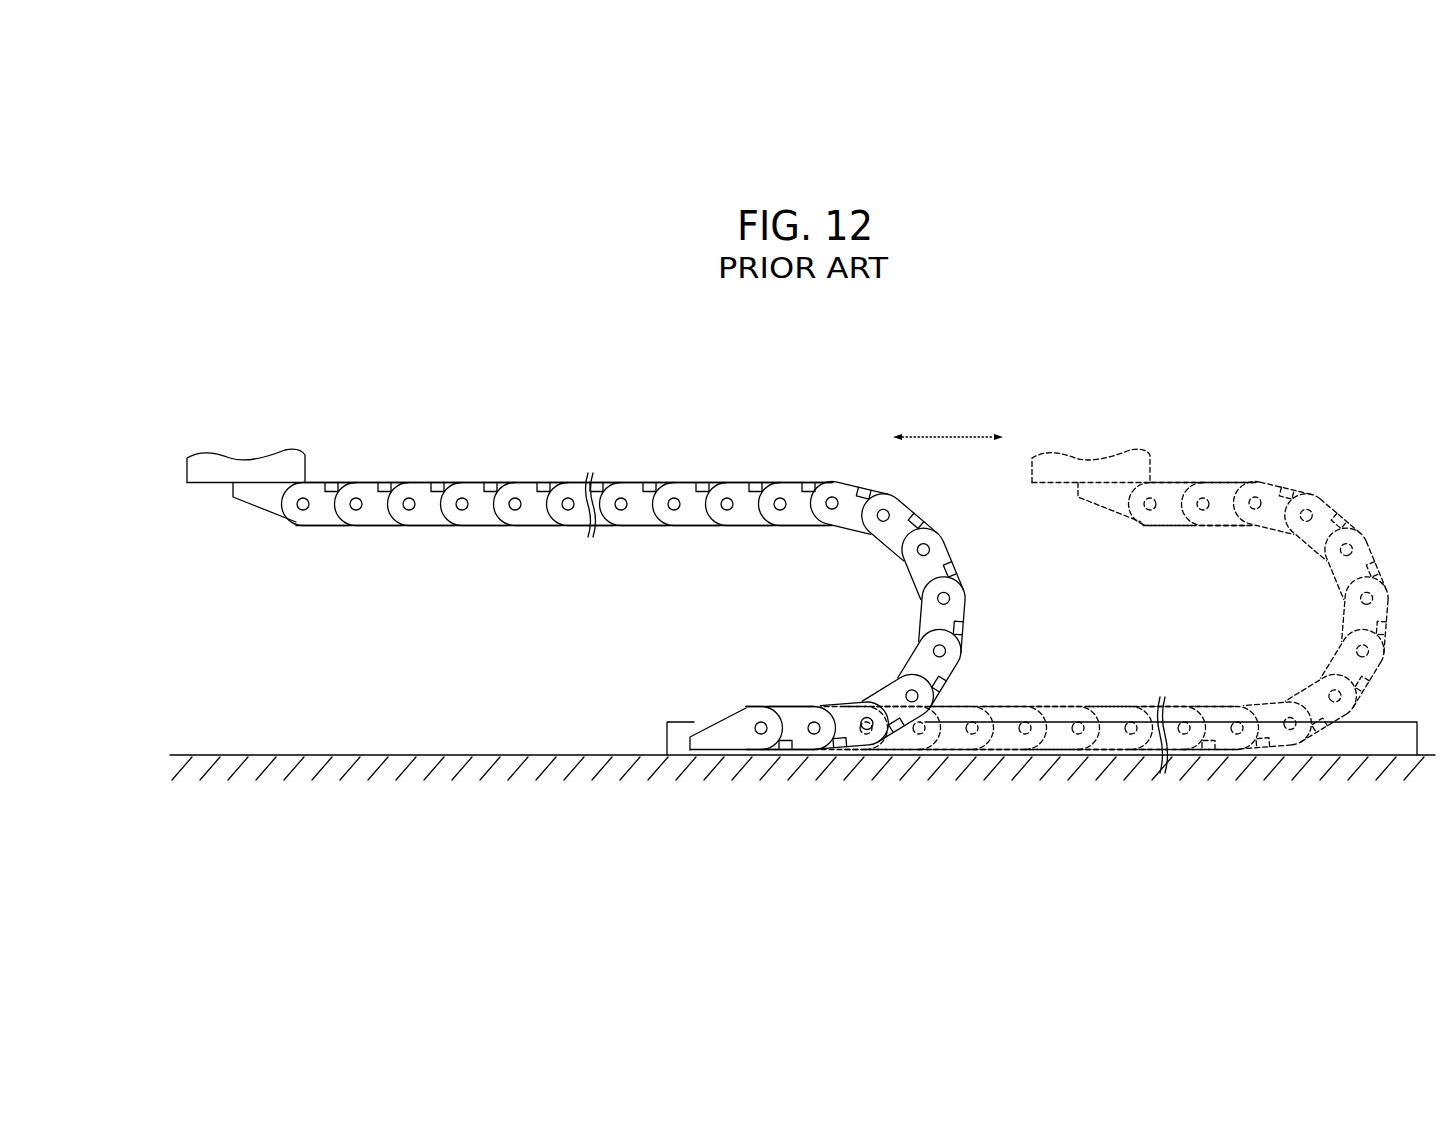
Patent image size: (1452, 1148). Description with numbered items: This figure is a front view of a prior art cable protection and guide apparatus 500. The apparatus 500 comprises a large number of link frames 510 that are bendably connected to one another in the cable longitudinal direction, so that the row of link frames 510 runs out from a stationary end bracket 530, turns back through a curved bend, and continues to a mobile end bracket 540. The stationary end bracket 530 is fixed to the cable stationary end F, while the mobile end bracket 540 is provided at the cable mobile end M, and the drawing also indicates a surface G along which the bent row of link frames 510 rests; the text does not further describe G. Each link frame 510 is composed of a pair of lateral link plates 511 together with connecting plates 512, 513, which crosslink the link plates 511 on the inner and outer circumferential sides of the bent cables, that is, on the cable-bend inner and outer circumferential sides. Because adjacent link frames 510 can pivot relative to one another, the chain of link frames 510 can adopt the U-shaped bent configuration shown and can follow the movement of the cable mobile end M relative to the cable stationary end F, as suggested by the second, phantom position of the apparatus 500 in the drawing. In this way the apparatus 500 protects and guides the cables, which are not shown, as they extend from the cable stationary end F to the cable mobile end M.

The cable protection and guide apparatus 500 is at (722, 402).
The link frame 510 is at (522, 470).
The link plate 511 is at (291, 527).
The connecting plate 512 is at (437, 563).
The connecting plate 513 is at (437, 481).
The stationary end bracket 530 is at (737, 712).
The mobile end bracket 540 is at (250, 502).
The cable mobile end M is at (293, 474).
The guide base G is at (1383, 733).
The cable stationary end F is at (689, 806).